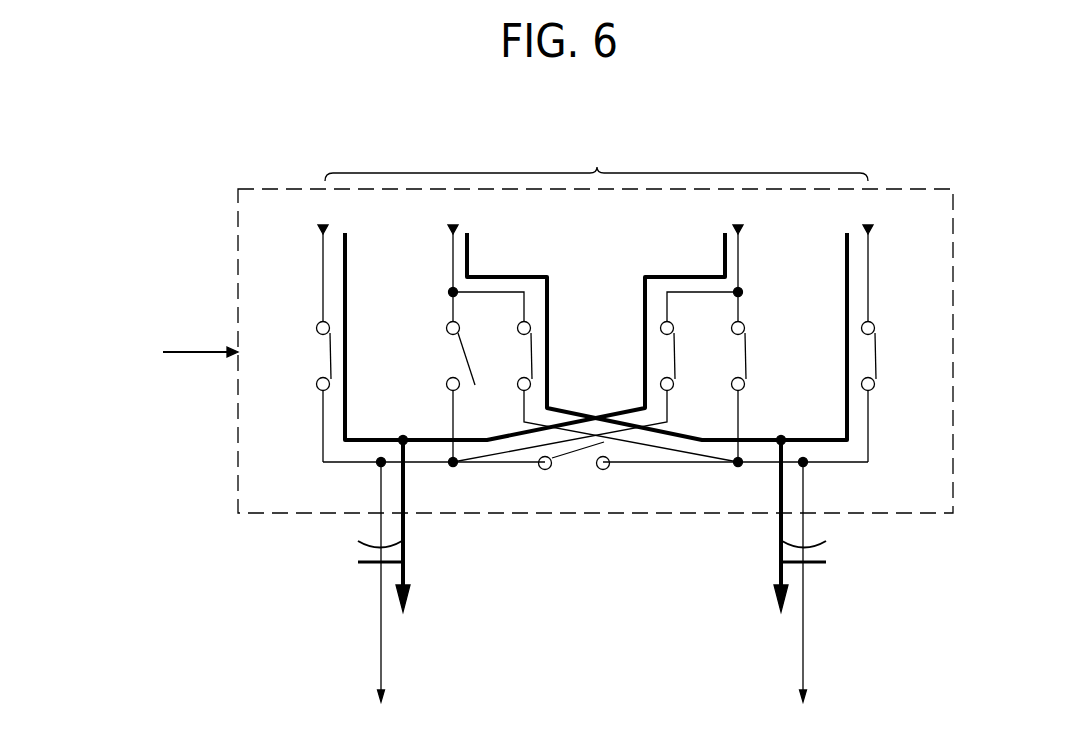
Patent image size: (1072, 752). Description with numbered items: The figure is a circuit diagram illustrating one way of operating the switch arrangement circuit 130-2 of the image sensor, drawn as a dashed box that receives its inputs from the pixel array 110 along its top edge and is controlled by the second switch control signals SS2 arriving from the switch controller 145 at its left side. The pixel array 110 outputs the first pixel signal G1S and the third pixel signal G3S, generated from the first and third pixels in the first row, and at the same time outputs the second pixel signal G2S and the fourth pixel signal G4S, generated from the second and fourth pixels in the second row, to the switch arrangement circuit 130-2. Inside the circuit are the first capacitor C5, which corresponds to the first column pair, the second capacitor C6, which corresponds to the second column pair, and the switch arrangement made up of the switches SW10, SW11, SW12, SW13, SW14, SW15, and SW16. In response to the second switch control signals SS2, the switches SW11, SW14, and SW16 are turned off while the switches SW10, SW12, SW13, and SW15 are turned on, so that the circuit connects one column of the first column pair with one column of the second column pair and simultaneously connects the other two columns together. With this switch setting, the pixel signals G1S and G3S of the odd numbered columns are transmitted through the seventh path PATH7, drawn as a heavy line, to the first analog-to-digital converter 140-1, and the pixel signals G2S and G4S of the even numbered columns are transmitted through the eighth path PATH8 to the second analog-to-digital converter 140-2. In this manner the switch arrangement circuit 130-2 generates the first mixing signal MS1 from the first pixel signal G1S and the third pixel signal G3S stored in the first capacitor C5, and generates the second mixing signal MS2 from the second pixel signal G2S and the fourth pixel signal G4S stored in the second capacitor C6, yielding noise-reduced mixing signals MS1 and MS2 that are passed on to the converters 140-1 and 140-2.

The switch arrangement circuit 130-2 is at (955, 352).
The pixel array 110 is at (596, 162).
The switch controller 145 is at (109, 352).
The second switch control signals SS2 is at (200, 341).
The first pixel signal G1S is at (324, 262).
The second pixel signal G2S is at (452, 262).
The third pixel signal G3S is at (738, 262).
The fourth pixel signal G4S is at (868, 262).
The seventh path PATH7 is at (351, 255).
The eighth path PATH8 is at (844, 255).
The switch SW10 is at (400, 394).
The switch SW11 is at (430, 392).
The switch SW12 is at (598, 379).
The switch SW13 is at (595, 377).
The switch SW14 is at (773, 392).
The switch SW15 is at (772, 394).
The switch SW16 is at (574, 470).
The first capacitor C5 is at (363, 553).
The second capacitor C6 is at (820, 553).
The first mixing signal MS1 is at (424, 529).
The second mixing signal MS2 is at (759, 529).
The first analog-to-digital converter 140-1 is at (378, 599).
The second analog-to-digital converter 140-2 is at (802, 599).